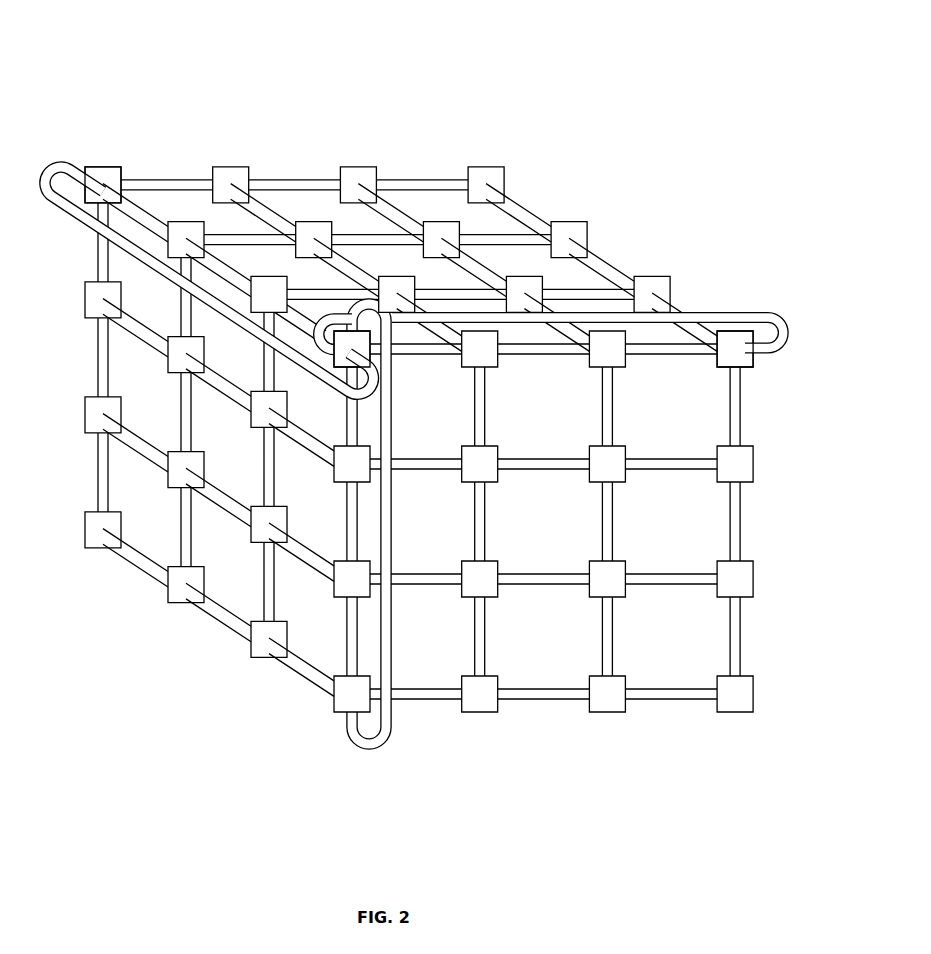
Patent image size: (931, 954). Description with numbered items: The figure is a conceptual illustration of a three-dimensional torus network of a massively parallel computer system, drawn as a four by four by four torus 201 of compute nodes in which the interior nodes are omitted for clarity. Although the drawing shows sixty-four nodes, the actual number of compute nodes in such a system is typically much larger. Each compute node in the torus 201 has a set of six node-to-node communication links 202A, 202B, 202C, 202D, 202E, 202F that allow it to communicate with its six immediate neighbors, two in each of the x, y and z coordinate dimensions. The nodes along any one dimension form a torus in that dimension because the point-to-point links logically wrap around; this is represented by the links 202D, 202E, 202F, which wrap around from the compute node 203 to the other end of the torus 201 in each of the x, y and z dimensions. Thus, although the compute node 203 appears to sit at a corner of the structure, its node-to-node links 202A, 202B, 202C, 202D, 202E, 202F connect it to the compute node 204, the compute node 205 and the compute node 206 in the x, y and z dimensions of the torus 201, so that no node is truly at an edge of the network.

The torus 201 is at (545, 101).
The node-to-node communication link 202A is at (408, 355).
The node-to-node communication link 202B is at (356, 426).
The node-to-node communication link 202C is at (320, 320).
The node-to-node communication link 202D is at (762, 311).
The node-to-node communication link 202E is at (368, 752).
The node-to-node communication link 202F is at (56, 160).
The compute node 203 is at (343, 349).
The compute node 204 is at (128, 165).
The compute node 205 is at (743, 357).
The compute node 206 is at (343, 703).